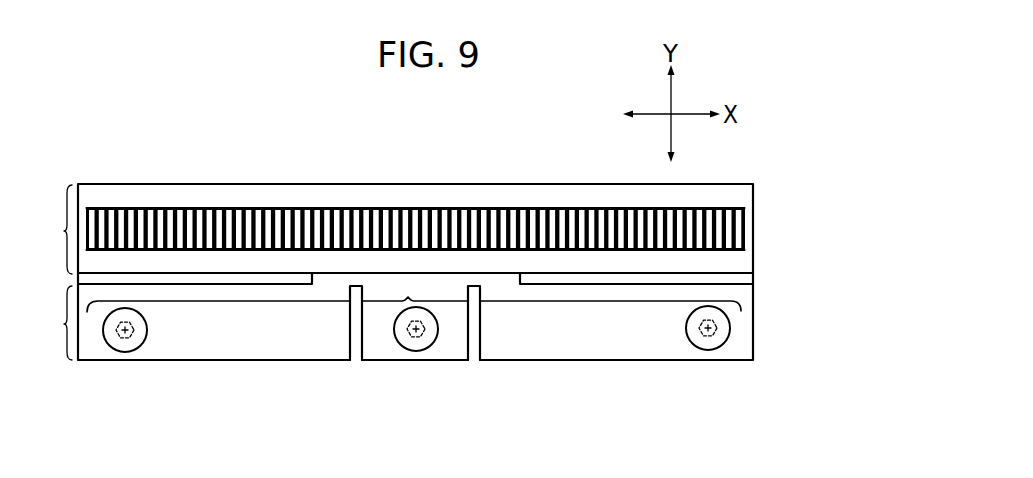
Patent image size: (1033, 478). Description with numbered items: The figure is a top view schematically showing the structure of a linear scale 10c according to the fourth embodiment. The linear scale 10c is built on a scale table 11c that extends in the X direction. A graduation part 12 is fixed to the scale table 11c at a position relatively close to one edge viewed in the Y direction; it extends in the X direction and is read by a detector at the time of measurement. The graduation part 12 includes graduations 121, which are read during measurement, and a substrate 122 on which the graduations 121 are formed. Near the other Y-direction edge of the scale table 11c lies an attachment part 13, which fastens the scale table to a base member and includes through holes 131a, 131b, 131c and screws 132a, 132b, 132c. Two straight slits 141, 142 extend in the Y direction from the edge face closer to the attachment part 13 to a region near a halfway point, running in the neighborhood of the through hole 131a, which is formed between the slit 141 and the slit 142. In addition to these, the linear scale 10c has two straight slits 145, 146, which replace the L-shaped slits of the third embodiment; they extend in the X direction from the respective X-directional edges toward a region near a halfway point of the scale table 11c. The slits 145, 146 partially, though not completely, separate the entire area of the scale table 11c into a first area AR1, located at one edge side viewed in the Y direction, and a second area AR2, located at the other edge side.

The linear scale 10c is at (364, 169).
The scale table 11c is at (530, 184).
The graduation part 12 is at (827, 168).
The graduations 121 is at (743, 231).
The substrate 122 is at (746, 211).
The attachment part 13 is at (414, 367).
The slit 141 is at (357, 328).
The slit 142 is at (476, 335).
The straight slit 145 is at (207, 270).
The straight slit 146 is at (572, 268).
The through hole 131a is at (421, 343).
The through hole 131b is at (127, 340).
The through hole 131c is at (710, 343).
The screw 132a is at (407, 340).
The screw 132b is at (117, 340).
The screw 132c is at (700, 340).
The first area AR1 is at (45, 229).
The second area AR2 is at (45, 323).